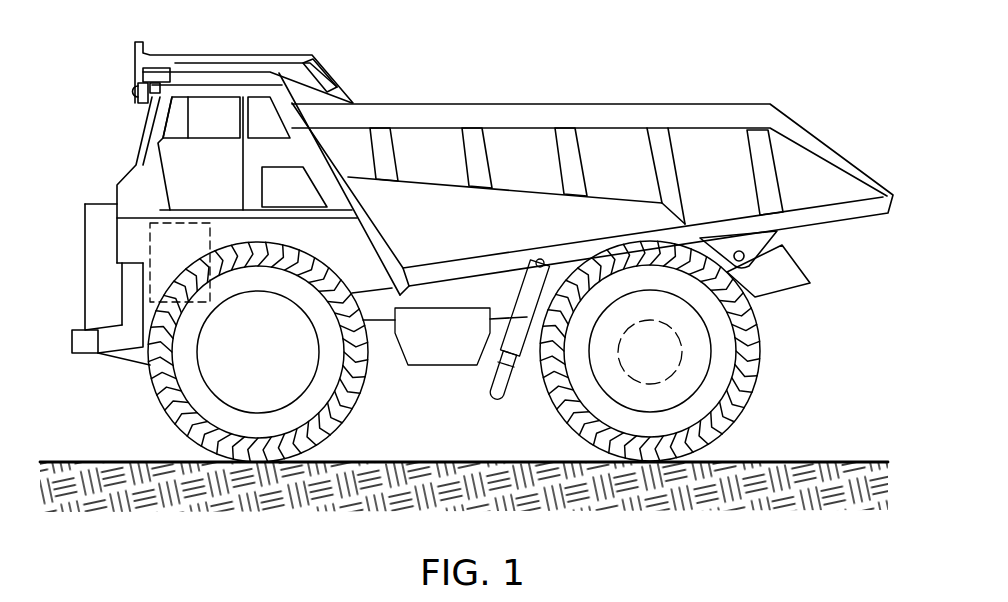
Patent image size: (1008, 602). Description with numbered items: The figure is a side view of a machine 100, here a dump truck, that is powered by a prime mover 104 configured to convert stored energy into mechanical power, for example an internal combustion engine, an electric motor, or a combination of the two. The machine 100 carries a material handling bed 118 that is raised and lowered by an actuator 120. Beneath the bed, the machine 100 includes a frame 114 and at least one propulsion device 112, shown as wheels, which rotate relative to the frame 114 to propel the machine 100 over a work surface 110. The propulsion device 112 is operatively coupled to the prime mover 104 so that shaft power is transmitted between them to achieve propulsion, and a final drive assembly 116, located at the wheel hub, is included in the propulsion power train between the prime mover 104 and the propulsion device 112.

The machine 100 is at (760, 41).
The prime mover 104 is at (150, 238).
The work surface 110 is at (838, 461).
The propulsion device 112 is at (335, 419).
The frame 114 is at (383, 321).
The final drive assembly 116 is at (680, 340).
The material handling bed 118 is at (491, 103).
The actuator 120 is at (524, 358).